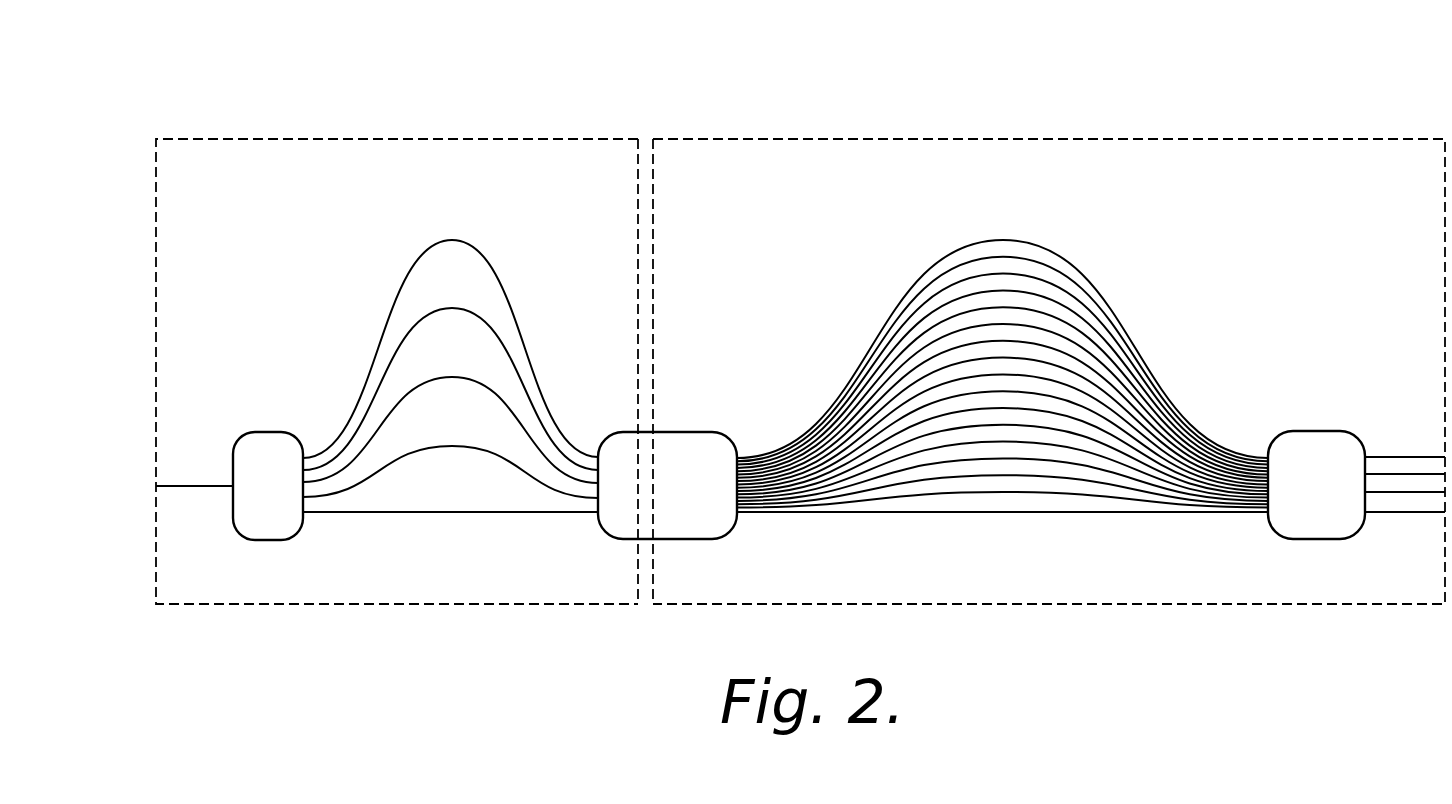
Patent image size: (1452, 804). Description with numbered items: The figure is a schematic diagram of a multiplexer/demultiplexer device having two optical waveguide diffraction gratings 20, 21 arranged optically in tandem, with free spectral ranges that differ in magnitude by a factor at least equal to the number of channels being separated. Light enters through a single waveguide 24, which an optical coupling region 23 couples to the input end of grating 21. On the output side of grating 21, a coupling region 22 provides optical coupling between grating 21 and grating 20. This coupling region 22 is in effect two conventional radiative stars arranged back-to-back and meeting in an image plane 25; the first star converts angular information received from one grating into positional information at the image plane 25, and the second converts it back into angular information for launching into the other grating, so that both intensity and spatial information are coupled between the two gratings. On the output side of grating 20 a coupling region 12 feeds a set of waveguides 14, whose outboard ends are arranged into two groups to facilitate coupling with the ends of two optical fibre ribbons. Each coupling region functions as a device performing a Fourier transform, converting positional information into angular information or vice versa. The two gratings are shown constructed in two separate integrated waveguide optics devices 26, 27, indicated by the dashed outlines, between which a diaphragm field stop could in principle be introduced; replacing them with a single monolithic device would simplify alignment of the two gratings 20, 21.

The coupling region 12 is at (1300, 468).
The waveguides 14 is at (1395, 467).
The optical waveguide diffraction grating 20 is at (1015, 318).
The optical waveguide diffraction grating 21 is at (472, 337).
The coupling region 22 is at (707, 457).
The optical coupling region 23 is at (270, 470).
The single waveguide 24 is at (208, 486).
The image plane 25 is at (643, 463).
The integrated waveguide optics device 26 is at (445, 139).
The integrated waveguide optics device 27 is at (1048, 139).